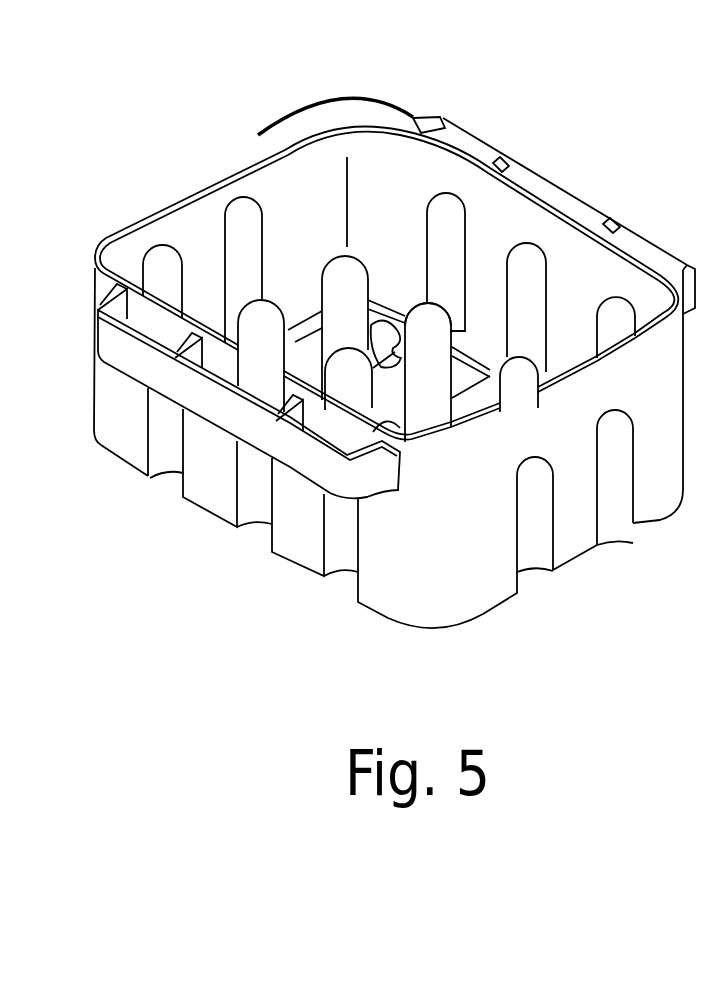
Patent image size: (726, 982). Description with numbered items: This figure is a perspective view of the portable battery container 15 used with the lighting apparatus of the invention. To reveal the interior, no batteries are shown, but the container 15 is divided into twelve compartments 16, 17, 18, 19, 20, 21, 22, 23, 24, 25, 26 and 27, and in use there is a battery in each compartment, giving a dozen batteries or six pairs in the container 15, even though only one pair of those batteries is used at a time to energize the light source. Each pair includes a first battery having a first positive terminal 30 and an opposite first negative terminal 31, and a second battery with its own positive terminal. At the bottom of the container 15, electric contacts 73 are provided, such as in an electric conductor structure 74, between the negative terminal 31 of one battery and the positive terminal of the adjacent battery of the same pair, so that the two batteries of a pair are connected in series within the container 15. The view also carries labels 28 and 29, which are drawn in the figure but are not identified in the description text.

The container 15 is at (384, 618).
The compartment 16 is at (250, 318).
The compartment 17 is at (338, 379).
The compartment 18 is at (433, 420).
The compartment 19 is at (333, 258).
The compartment 20 is at (412, 300).
The compartment 21 is at (518, 377).
The compartment 22 is at (165, 275).
The compartment 23 is at (165, 417).
The compartment 24 is at (263, 507).
The compartment 25 is at (342, 550).
The compartment 26 is at (533, 528).
The compartment 27 is at (617, 477).
The post 28 is at (614, 322).
The post 29 is at (528, 280).
The first positive terminal 30 is at (447, 241).
The first negative terminal 31 is at (242, 227).
The electric contacts 73 is at (378, 327).
The electric conductor structure 74 is at (470, 352).